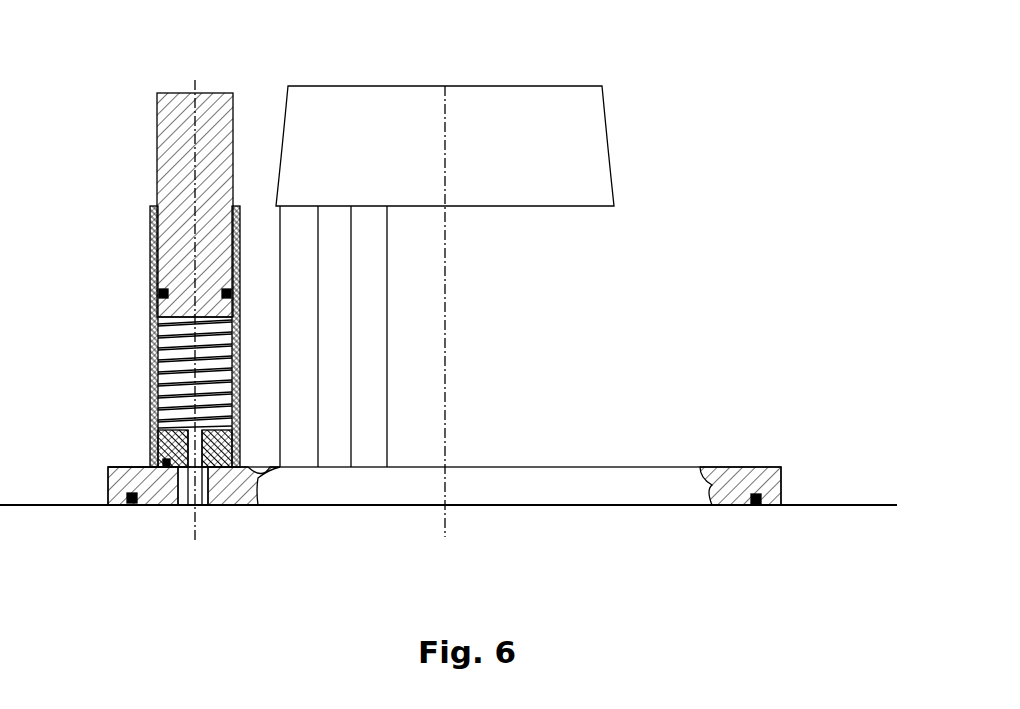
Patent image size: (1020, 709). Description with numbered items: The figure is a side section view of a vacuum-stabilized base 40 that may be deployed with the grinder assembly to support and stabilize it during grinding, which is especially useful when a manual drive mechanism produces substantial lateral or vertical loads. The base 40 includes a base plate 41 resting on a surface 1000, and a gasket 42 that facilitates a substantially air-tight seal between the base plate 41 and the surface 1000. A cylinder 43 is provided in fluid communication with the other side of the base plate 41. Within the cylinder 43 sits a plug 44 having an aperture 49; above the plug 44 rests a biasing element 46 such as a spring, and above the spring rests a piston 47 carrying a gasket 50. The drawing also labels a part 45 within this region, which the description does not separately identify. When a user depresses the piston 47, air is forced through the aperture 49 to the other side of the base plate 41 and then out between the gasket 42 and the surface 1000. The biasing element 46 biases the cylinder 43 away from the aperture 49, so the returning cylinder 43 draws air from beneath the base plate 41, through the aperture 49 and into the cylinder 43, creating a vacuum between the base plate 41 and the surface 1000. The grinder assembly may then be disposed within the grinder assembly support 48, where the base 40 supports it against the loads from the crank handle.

The vacuum-stabilized base 40 is at (707, 150).
The base plate 41 is at (110, 467).
The gasket 42 is at (128, 467).
The cylinder 43 is at (146, 463).
The plug 44 is at (152, 455).
The spring 45 is at (150, 438).
The biasing element 46 is at (150, 312).
The piston 47 is at (150, 206).
The grinder assembly support 48 is at (303, 112).
The aperture 49 is at (200, 506).
The gasket 50 is at (233, 290).
The surface 1000 is at (840, 505).